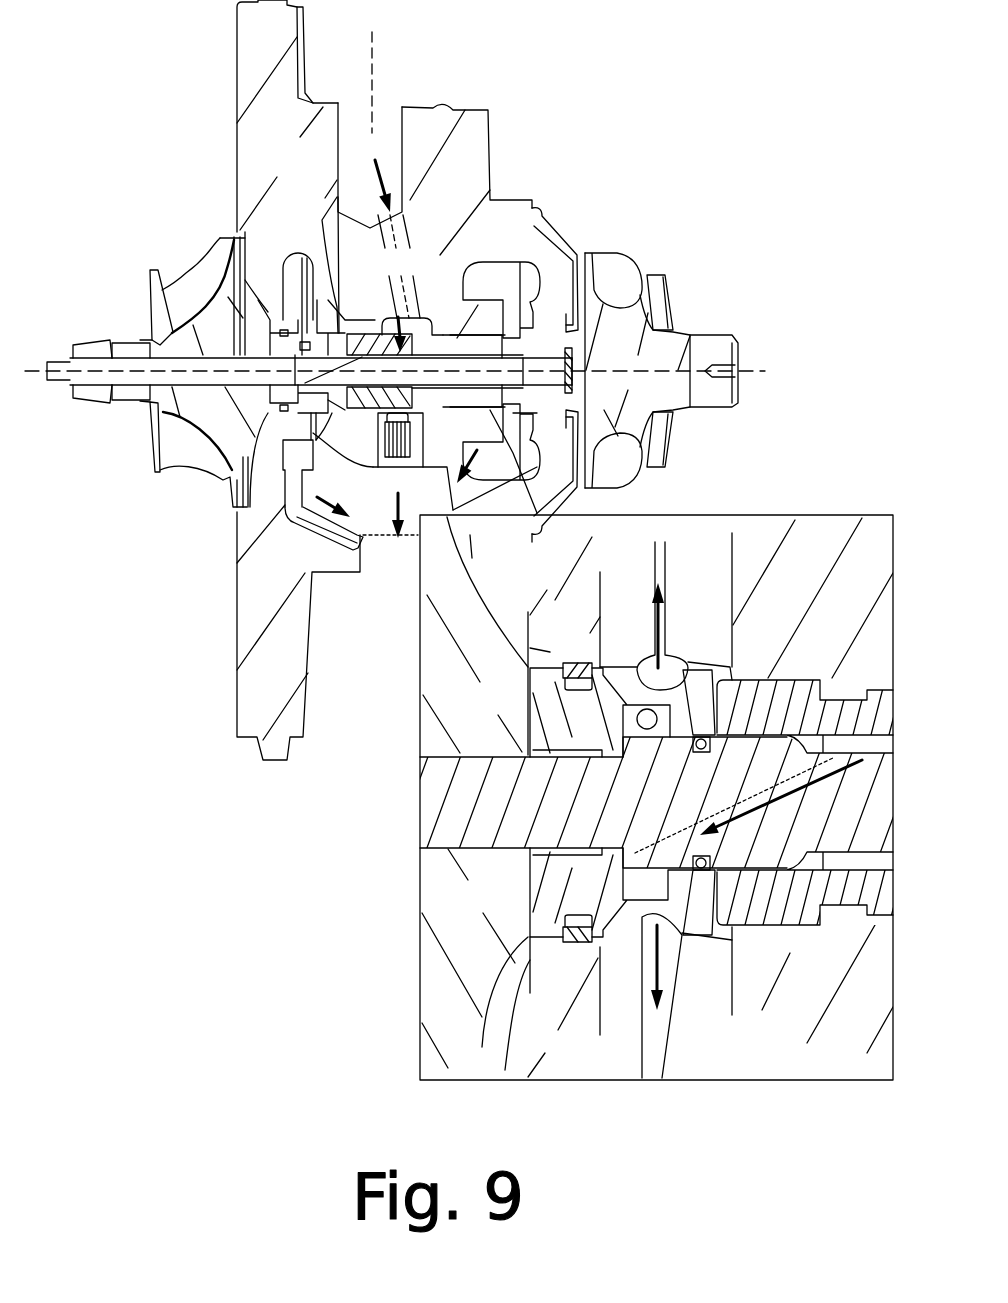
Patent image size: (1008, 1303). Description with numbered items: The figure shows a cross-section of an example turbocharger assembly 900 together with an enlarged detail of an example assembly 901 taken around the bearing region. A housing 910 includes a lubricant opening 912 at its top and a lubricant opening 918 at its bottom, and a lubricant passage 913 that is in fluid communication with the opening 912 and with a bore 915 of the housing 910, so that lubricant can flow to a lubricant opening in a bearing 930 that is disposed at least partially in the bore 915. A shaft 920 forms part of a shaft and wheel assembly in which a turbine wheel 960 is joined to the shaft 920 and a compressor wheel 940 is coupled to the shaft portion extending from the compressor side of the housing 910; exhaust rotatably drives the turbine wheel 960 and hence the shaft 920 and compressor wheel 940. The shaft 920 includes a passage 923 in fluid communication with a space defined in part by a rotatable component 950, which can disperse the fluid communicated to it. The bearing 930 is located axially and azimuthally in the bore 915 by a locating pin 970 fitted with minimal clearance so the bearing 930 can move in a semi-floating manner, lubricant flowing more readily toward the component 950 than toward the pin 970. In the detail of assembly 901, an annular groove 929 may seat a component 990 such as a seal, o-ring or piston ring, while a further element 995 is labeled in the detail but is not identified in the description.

The assembly 900 is at (173, 101).
The assembly 901 is at (530, 560).
The housing 910 is at (306, 174).
The lubricant opening 912 is at (390, 97).
The lubricant passage 913 is at (416, 274).
The bore 915 is at (322, 220).
The lubricant opening 918 is at (416, 570).
The shaft 920 is at (501, 384).
The passage 923 is at (313, 478).
The annular groove 929 is at (693, 870).
The bearing 930 is at (790, 720).
The compressor wheel 940 is at (251, 349).
The rotatable component 950 is at (596, 735).
The turbine wheel 960 is at (647, 384).
The locating pin 970 is at (388, 478).
The component 990 is at (702, 870).
The seal 995 is at (598, 947).